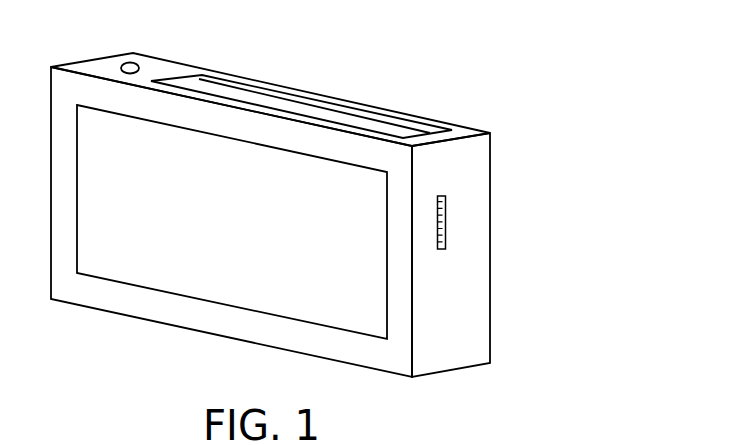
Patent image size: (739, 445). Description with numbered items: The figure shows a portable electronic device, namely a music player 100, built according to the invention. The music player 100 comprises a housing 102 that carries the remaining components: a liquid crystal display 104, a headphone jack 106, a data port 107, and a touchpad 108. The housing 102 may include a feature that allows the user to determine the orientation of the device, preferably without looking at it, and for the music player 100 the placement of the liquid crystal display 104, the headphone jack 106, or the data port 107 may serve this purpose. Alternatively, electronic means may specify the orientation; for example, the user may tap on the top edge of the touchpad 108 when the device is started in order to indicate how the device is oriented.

The music player 100 is at (548, 71).
The housing 102 is at (473, 167).
The liquid crystal display 104 is at (318, 107).
The headphone jack 106 is at (133, 62).
The data port 107 is at (446, 223).
The touchpad 108 is at (187, 223).